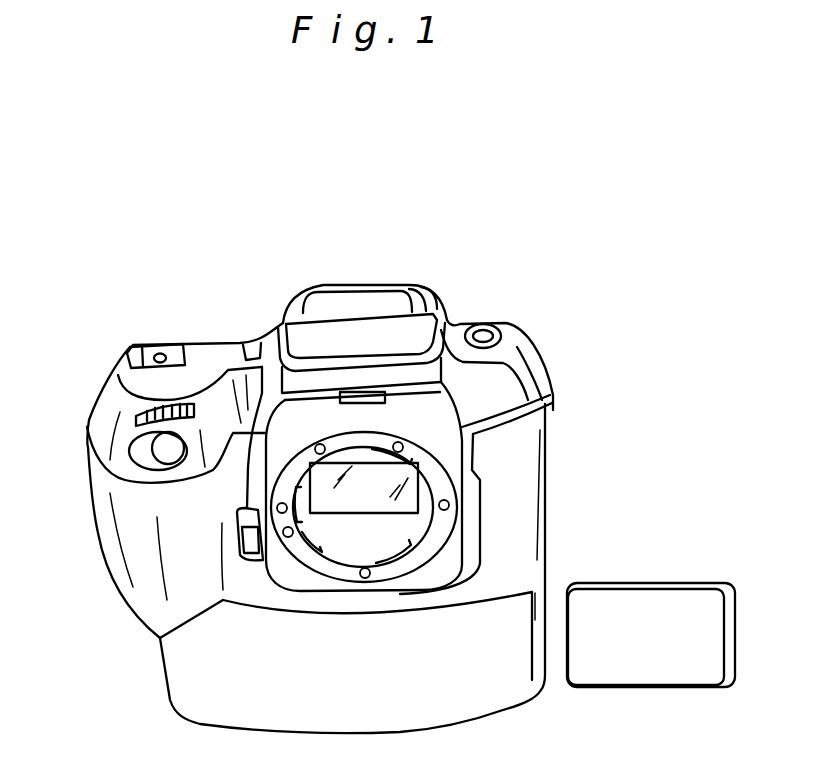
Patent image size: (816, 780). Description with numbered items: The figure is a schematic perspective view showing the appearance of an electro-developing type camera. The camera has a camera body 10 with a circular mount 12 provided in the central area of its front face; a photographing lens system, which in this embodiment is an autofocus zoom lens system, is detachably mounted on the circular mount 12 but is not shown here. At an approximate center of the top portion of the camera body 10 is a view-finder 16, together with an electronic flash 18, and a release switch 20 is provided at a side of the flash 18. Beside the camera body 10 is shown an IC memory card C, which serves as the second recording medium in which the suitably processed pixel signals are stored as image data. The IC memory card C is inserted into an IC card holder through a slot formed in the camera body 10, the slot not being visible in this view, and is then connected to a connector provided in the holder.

The camera body 10 is at (532, 327).
The circular mount 12 is at (432, 472).
The view-finder 16 is at (372, 285).
The electronic flash 18 is at (313, 350).
The release switch 20 is at (165, 457).
The IC memory card C is at (640, 658).